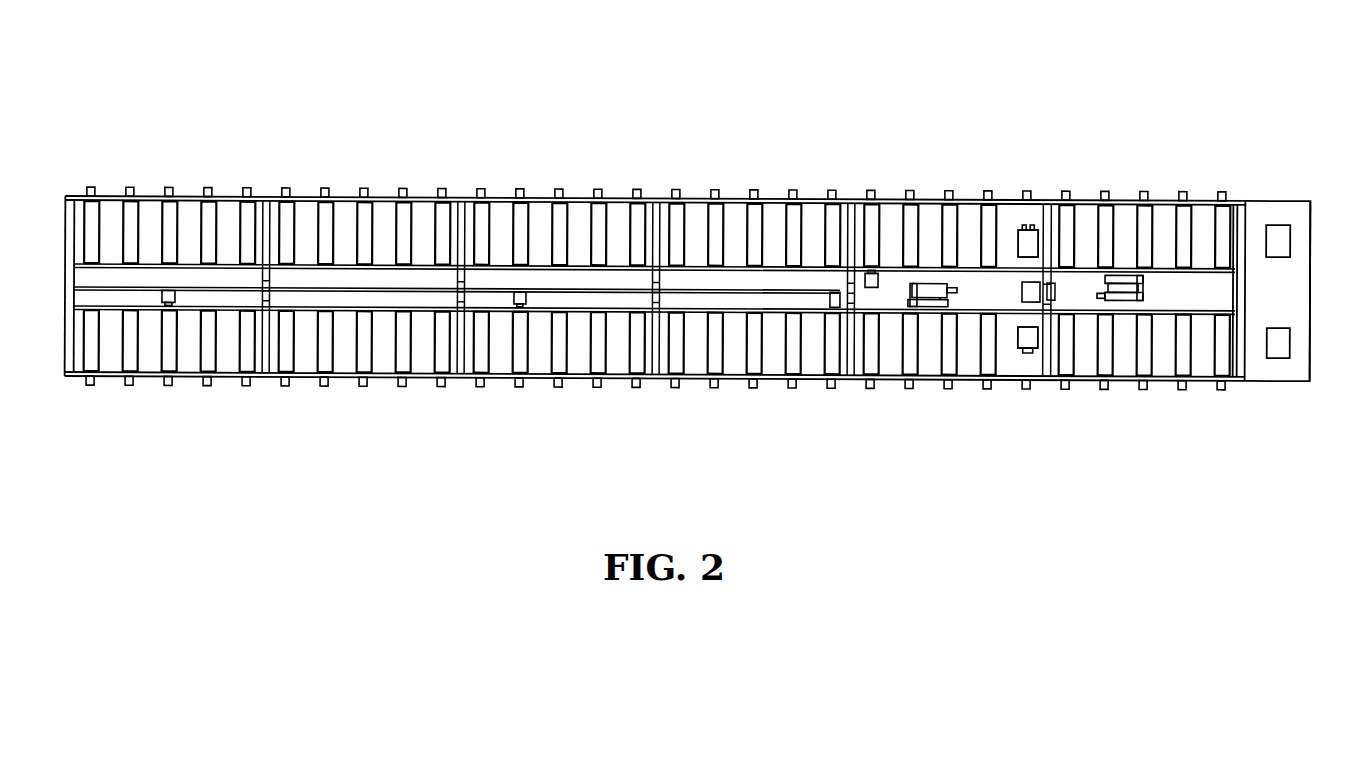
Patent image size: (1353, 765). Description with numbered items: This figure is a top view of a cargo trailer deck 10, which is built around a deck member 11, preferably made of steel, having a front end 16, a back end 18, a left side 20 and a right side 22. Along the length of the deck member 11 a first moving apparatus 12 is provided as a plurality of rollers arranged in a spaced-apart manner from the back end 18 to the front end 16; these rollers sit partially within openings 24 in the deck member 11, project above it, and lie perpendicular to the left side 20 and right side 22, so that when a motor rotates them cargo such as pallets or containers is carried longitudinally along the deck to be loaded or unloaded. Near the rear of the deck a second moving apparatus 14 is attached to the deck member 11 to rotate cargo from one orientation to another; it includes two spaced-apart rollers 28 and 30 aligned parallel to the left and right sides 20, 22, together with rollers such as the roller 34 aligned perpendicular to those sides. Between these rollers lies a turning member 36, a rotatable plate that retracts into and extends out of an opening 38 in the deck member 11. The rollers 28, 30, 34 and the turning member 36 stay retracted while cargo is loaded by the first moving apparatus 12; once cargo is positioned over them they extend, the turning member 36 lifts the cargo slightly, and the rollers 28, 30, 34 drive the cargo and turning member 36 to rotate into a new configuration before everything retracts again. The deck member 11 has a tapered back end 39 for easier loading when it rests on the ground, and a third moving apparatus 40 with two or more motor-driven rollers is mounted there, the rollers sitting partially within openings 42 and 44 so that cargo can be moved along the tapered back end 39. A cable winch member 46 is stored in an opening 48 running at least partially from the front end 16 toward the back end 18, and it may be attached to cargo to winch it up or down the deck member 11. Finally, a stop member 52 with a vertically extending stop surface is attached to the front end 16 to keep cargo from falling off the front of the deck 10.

The cargo trailer deck 10 is at (1049, 136).
The deck member 11 is at (345, 193).
The first moving apparatus 12 is at (128, 227).
The second moving apparatus 14 is at (925, 284).
The front end 16 is at (66, 340).
The back end 18 is at (1308, 372).
The left side 20 is at (815, 393).
The right side 22 is at (812, 197).
The openings 24 is at (292, 355).
The roller 28 is at (918, 308).
The roller 30 is at (1130, 301).
The roller 34 is at (1027, 229).
The turning member 36 is at (1027, 301).
The opening 38 is at (1042, 272).
The tapered back end 39 is at (1268, 383).
The third moving apparatus 40 is at (1286, 323).
The opening 42 is at (1272, 224).
The opening 44 is at (1292, 343).
The cable winch member 46 is at (380, 292).
The opening 48 is at (615, 300).
The stop member 52 is at (72, 232).